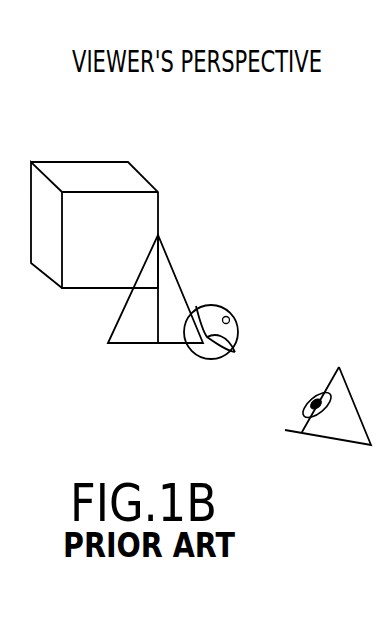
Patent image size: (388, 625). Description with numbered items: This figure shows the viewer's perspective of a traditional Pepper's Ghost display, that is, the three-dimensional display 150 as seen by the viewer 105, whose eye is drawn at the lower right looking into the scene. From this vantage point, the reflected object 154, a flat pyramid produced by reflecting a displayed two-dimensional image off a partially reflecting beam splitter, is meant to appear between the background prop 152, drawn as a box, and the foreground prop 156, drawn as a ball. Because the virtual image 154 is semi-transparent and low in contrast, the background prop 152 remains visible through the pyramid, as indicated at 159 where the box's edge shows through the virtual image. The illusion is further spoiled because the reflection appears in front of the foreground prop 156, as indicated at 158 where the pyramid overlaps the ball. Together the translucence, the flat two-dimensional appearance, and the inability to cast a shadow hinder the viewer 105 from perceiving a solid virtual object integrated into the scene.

The viewer 105 is at (345, 442).
The 3D display 150 is at (220, 208).
The background prop 152 is at (131, 167).
The reflected object 154 is at (193, 297).
The foreground prop 156 is at (250, 322).
The reflection in front of foreground image 158 is at (233, 350).
The background object visible through virtual image 159 is at (145, 287).